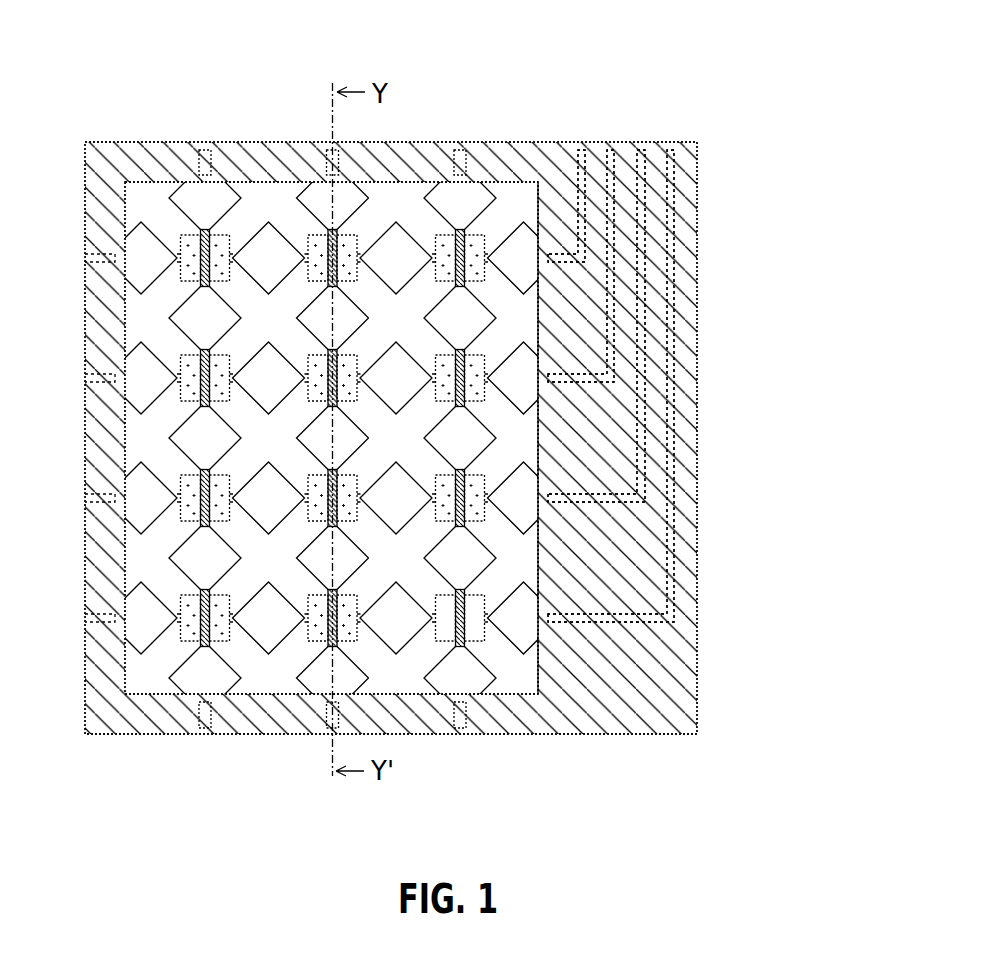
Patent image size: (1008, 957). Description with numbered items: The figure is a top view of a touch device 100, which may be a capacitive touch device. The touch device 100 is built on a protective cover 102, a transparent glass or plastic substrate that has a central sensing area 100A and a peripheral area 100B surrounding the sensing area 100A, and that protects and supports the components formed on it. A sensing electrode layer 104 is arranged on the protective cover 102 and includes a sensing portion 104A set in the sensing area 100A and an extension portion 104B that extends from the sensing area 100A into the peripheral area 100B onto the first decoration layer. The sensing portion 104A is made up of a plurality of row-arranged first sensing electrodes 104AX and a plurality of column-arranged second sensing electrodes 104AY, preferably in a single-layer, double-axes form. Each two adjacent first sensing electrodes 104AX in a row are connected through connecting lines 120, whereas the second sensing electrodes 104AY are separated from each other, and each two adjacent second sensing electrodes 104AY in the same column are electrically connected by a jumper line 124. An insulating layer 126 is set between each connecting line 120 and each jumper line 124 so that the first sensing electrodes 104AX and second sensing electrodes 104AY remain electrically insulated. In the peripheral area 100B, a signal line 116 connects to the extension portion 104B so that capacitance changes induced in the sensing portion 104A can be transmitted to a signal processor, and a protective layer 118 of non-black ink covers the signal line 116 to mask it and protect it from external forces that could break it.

The touch device 100 is at (743, 122).
The sensing area 100A is at (151, 683).
The peripheral area 100B is at (265, 718).
The protective cover 102 is at (505, 195).
The sensing electrode layer 104 is at (452, 412).
The sensing portion 104A is at (415, 412).
The extension portion 104B is at (560, 397).
The first sensing electrodes 104AX is at (140, 233).
The second sensing electrodes 104AY is at (181, 185).
The signal line 116 is at (700, 253).
The protective layer 118 is at (700, 657).
The connecting lines 120 is at (345, 228).
The jumper line 124 is at (484, 640).
The insulating layer 126 is at (452, 641).